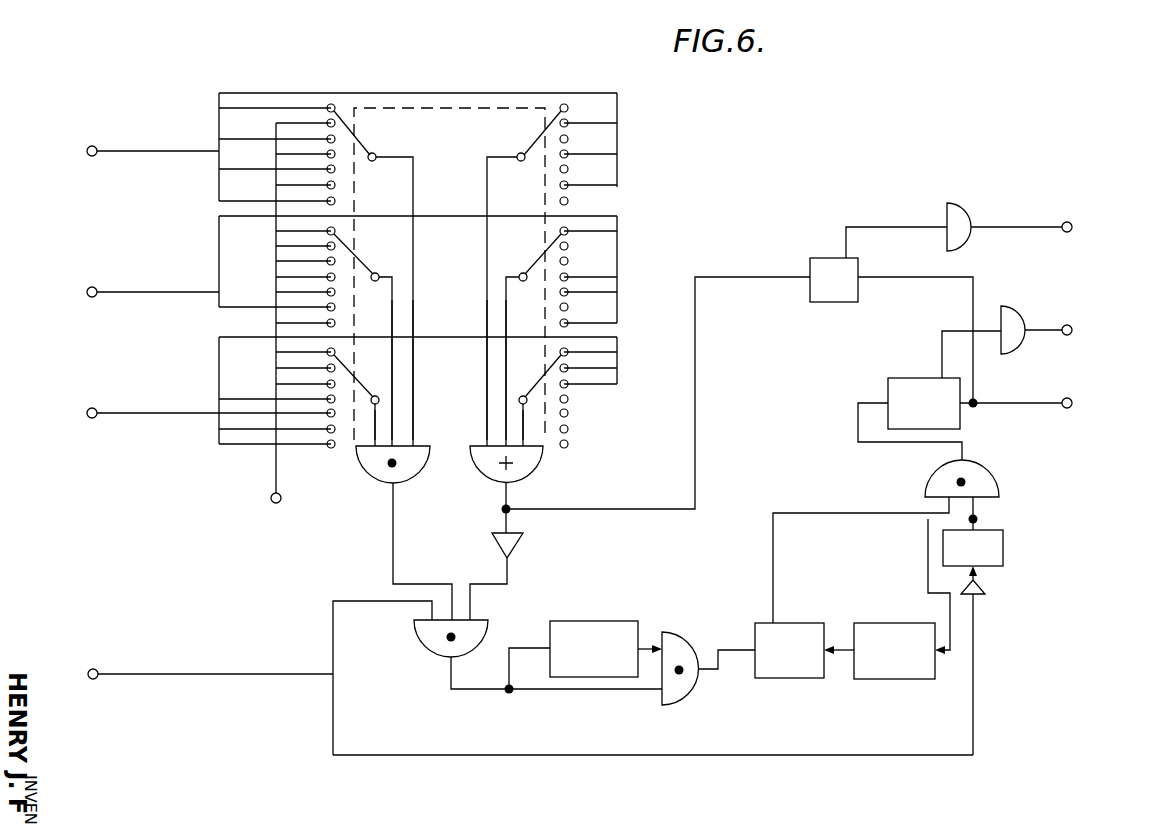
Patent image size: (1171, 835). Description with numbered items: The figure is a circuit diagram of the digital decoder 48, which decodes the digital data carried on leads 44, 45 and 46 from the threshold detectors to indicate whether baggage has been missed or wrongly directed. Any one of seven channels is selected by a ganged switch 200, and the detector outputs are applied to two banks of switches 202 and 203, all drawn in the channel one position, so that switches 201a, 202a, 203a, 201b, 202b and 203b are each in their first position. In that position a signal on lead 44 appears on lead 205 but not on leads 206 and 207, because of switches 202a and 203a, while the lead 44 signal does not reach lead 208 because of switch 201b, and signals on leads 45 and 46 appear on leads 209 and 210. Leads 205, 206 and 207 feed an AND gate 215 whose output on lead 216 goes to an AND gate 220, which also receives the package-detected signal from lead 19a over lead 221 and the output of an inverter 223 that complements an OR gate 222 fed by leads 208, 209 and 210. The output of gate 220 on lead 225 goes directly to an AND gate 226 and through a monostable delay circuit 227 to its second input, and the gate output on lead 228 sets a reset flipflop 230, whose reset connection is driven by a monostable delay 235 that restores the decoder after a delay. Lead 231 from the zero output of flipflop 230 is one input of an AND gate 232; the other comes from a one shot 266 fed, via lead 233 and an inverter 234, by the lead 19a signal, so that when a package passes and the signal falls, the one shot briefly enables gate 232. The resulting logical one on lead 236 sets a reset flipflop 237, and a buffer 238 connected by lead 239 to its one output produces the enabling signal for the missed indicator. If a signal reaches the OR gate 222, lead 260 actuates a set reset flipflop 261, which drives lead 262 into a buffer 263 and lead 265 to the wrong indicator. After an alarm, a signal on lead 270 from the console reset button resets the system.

The lead 19a is at (257, 673).
The lead 44 is at (128, 151).
The lead 45 is at (113, 292).
The lead 46 is at (113, 413).
The digital decoder 48 is at (657, 203).
The ganged switch 200 is at (481, 162).
The switch 201a is at (352, 133).
The switch 201b is at (540, 136).
The bank of switches 202 is at (333, 84).
The bank of switches 203 is at (577, 84).
The switch 202a is at (357, 256).
The switch 202b is at (540, 268).
The switch 203a is at (355, 380).
The switch 203b is at (535, 392).
The lead 205 is at (413, 427).
The lead 206 is at (393, 409).
The lead 207 is at (373, 430).
The lead 208 is at (487, 434).
The lead 209 is at (508, 426).
The lead 210 is at (526, 438).
The AND gate 215 is at (375, 478).
The lead 216 is at (393, 525).
The AND gate 220 is at (431, 655).
The lead 221 is at (346, 601).
The OR gate 222 is at (527, 477).
The inverter 223 is at (522, 544).
The lead 225 is at (575, 690).
The AND gate 226 is at (690, 700).
The monostable delay circuit 227 is at (593, 621).
The lead 228 is at (735, 650).
The reset flipflop 230 is at (800, 678).
The lead 231 is at (773, 545).
The AND gate 232 is at (992, 477).
The lead 233 is at (690, 755).
The inverter 234 is at (985, 590).
The monostable delay 235 is at (895, 679).
The lead 236 is at (892, 443).
The reset flipflop 237 is at (905, 378).
The buffer 238 is at (1030, 291).
The lead 239 is at (956, 331).
The lead 260 is at (695, 400).
The set reset flipflop 261 is at (826, 258).
The lead 262 is at (916, 227).
The buffer 263 is at (960, 203).
The lead 265 is at (1057, 227).
The one shot 266 is at (1004, 541).
The lead 270 is at (1030, 378).